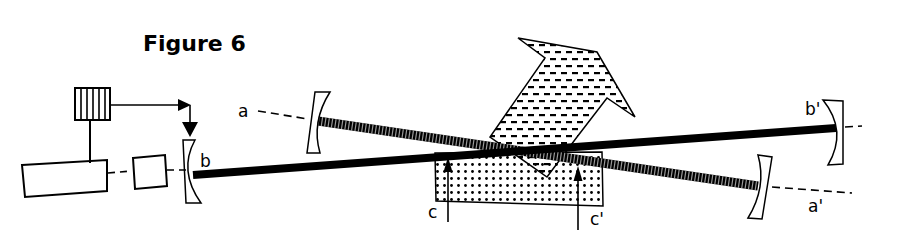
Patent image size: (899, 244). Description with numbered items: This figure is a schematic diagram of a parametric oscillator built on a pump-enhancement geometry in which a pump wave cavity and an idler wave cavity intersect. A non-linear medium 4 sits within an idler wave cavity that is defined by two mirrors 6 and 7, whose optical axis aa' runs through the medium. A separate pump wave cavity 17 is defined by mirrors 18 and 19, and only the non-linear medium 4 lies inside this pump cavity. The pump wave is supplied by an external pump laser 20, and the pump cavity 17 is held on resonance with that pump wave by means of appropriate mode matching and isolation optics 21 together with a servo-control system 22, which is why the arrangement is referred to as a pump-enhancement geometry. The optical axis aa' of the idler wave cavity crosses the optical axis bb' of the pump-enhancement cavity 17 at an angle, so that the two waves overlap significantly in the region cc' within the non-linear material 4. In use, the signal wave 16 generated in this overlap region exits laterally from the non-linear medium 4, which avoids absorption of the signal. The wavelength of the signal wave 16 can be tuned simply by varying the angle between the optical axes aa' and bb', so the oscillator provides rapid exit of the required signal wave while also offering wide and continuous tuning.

The non-linear medium 4 is at (519, 189).
The mirror 6 is at (327, 109).
The mirror 7 is at (760, 198).
The signal wave 16 is at (565, 107).
The pump wave cavity 17 is at (514, 143).
The mirror 18 is at (837, 114).
The mirror 19 is at (196, 183).
The external pump laser 20 is at (64, 170).
The mode matching and isolation optics 21 is at (150, 160).
The servo-control system 22 is at (136, 115).